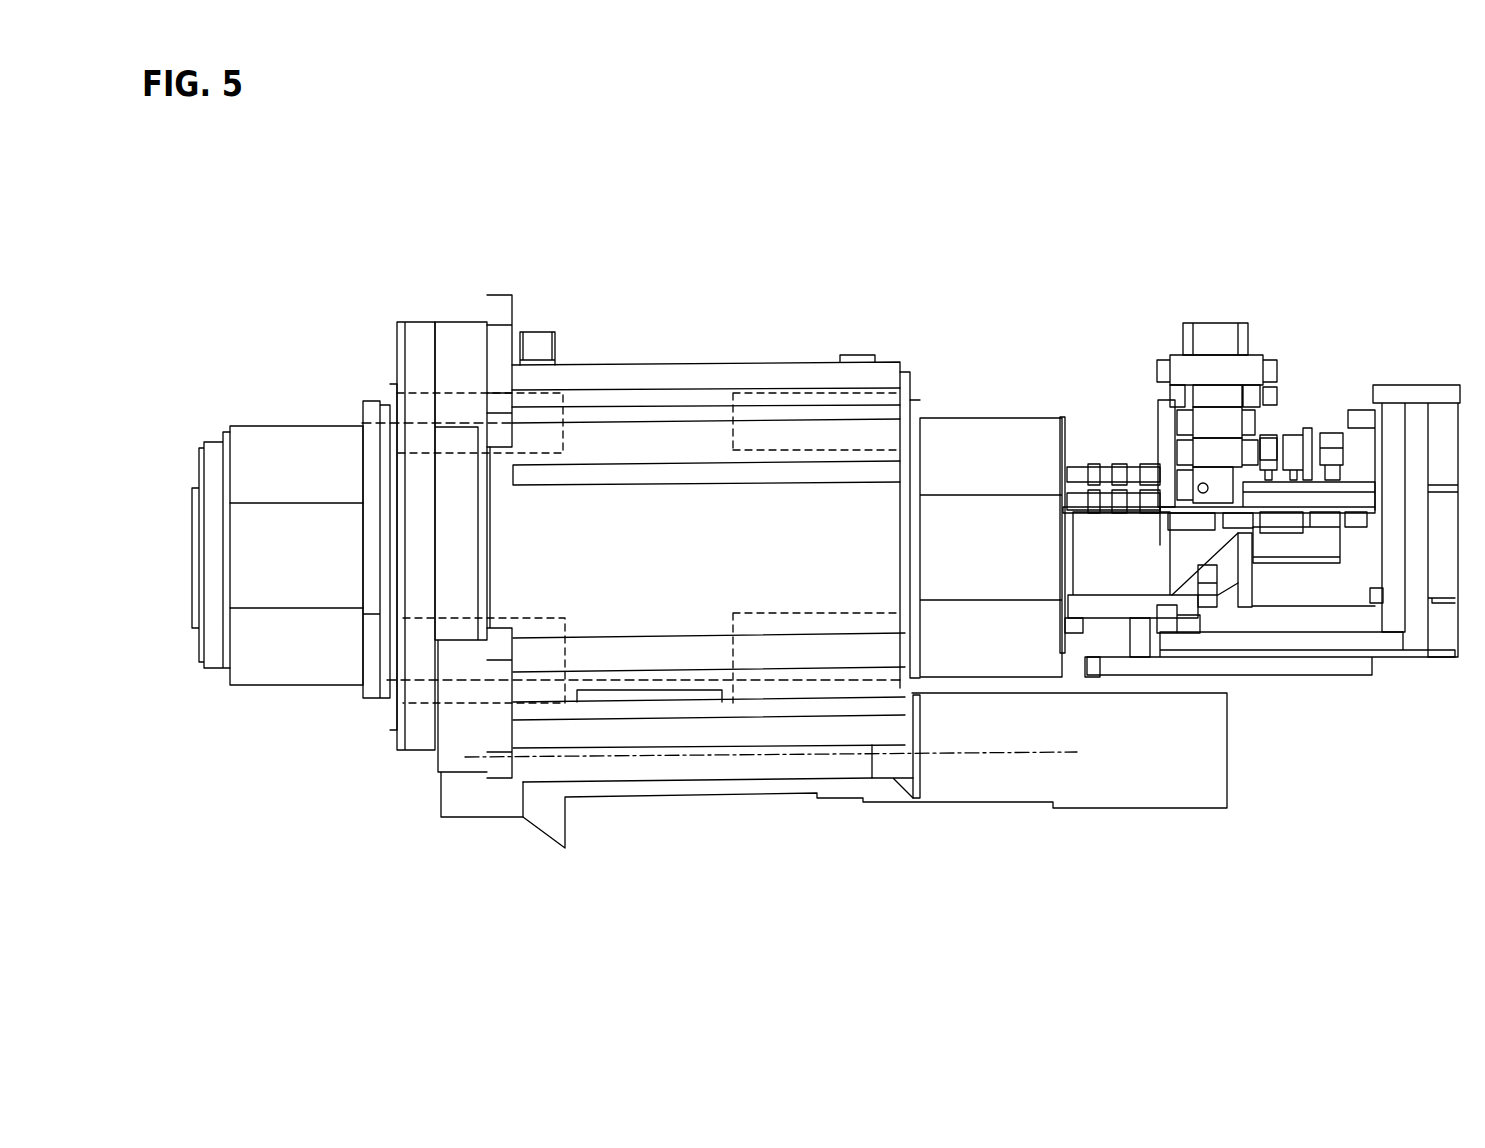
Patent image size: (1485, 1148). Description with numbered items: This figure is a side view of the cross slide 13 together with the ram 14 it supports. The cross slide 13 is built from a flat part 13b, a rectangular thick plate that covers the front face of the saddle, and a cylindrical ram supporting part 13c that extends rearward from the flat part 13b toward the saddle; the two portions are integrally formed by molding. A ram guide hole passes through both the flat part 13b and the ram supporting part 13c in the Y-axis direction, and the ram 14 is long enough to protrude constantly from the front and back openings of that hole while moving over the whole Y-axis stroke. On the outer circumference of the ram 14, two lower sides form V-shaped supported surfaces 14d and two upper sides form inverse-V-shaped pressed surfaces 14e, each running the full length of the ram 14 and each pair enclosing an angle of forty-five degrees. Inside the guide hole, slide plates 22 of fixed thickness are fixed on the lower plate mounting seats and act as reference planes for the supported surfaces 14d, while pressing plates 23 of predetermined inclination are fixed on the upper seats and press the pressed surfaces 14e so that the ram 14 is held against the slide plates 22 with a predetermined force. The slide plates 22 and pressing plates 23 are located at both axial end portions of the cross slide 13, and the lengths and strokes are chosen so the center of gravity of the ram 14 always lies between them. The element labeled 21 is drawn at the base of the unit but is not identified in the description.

The cross slide 13 is at (466, 316).
The flat part 13b is at (440, 320).
The ram supporting part 13c is at (690, 364).
The ram 14 is at (290, 425).
The supported surfaces 14d is at (287, 665).
The pressed surfaces 14e is at (307, 448).
The base 21 is at (830, 755).
The slide plates 22 is at (773, 612).
The pressing plates 23 is at (535, 393).